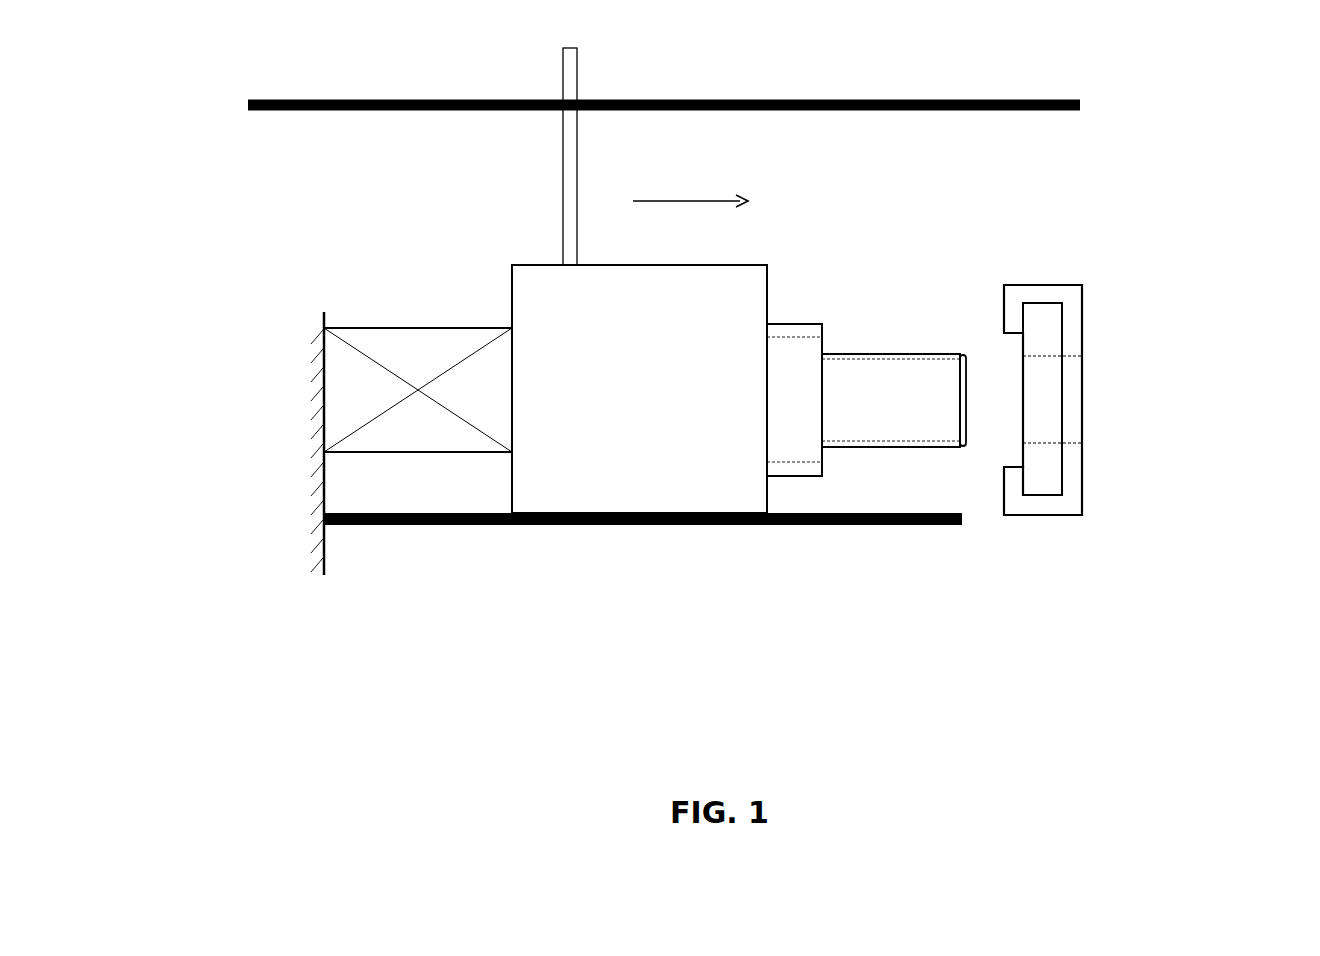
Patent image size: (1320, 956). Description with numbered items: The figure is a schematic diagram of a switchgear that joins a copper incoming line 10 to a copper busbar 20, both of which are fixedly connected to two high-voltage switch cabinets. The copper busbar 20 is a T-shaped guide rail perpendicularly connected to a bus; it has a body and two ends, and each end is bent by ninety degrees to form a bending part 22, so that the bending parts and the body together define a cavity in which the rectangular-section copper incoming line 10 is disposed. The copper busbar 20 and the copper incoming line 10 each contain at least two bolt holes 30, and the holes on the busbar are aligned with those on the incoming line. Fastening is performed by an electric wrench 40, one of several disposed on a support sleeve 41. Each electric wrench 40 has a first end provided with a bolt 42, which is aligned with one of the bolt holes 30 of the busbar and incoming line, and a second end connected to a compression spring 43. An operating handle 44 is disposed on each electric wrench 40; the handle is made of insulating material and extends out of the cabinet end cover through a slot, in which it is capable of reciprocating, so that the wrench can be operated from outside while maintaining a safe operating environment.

The copper incoming line 10 is at (1052, 323).
The copper busbar 20 is at (1090, 460).
The bending part 22 is at (1017, 482).
The bolt hole 30 is at (1073, 382).
The electric wrench 40 is at (575, 485).
The support sleeve 41 is at (708, 525).
The bolt 42 is at (887, 453).
The compression spring 43 is at (345, 410).
The operating handle 44 is at (560, 158).